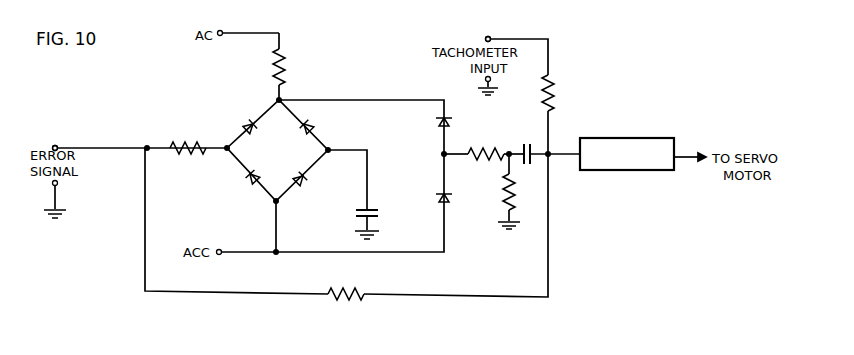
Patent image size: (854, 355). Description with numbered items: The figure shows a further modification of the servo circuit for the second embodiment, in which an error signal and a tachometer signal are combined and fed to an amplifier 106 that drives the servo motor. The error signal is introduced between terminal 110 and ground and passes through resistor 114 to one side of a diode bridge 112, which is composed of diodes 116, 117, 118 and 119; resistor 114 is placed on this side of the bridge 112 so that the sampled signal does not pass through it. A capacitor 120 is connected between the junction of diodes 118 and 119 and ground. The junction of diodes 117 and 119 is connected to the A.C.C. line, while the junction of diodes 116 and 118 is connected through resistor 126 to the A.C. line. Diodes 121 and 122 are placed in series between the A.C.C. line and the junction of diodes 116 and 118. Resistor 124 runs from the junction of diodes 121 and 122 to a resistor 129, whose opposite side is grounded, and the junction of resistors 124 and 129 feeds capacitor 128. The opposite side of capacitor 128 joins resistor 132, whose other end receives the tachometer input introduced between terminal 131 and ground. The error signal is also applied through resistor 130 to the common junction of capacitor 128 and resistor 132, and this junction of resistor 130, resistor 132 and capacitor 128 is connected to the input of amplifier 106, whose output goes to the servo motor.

The amplifier 106 is at (650, 137).
The terminal 110 is at (56, 146).
The diode bridge 112 is at (275, 145).
The resistor 114 is at (172, 142).
The diode 116 is at (249, 118).
The diode 117 is at (246, 178).
The diode 118 is at (311, 122).
The diode 119 is at (308, 182).
The capacitor 120 is at (378, 214).
The diode 121 is at (436, 194).
The diode 122 is at (436, 120).
The resistor 124 is at (470, 150).
The resistor 126 is at (284, 58).
The capacitor 128 is at (530, 168).
The resistor 129 is at (514, 196).
The resistor 130 is at (344, 300).
The terminal 131 is at (486, 38).
The resistor 132 is at (556, 99).